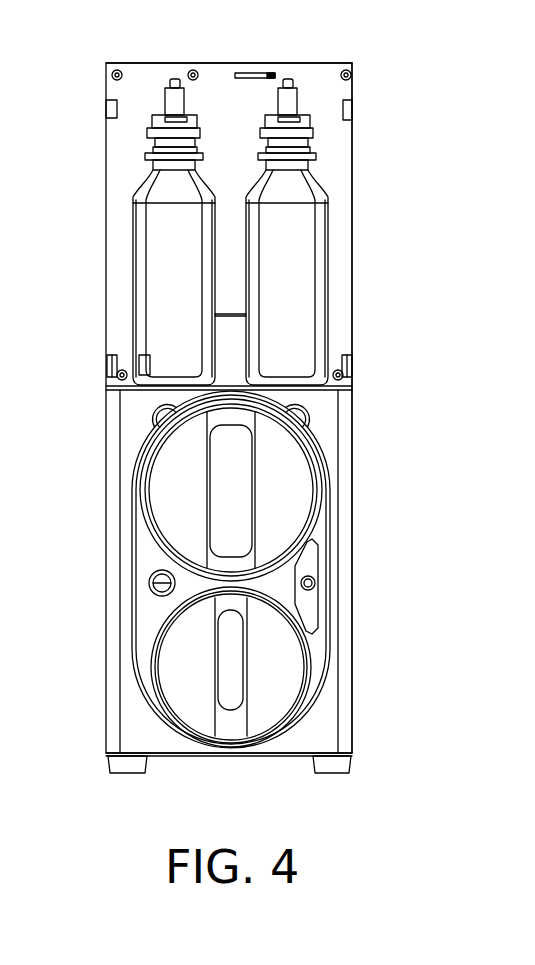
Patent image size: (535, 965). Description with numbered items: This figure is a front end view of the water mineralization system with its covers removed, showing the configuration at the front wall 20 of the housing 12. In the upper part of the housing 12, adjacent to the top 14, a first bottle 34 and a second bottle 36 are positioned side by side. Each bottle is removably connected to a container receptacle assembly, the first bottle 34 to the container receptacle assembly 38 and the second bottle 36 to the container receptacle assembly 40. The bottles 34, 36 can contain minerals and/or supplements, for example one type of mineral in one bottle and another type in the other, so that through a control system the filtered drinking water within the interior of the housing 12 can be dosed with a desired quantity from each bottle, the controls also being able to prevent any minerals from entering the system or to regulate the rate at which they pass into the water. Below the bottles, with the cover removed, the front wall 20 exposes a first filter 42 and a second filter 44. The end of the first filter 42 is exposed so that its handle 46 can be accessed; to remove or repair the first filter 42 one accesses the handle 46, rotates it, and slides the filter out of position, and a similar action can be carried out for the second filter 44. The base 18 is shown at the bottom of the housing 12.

The housing 12 is at (353, 335).
The top 14 is at (309, 62).
The base 18 is at (277, 753).
The front wall 20 is at (352, 158).
The first bottle 34 is at (300, 260).
The second bottle 36 is at (145, 285).
The container receptacle assembly 38 is at (313, 132).
The container receptacle assembly 40 is at (147, 133).
The first filter 42 is at (288, 664).
The second filter 44 is at (300, 493).
The handle 46 is at (228, 702).